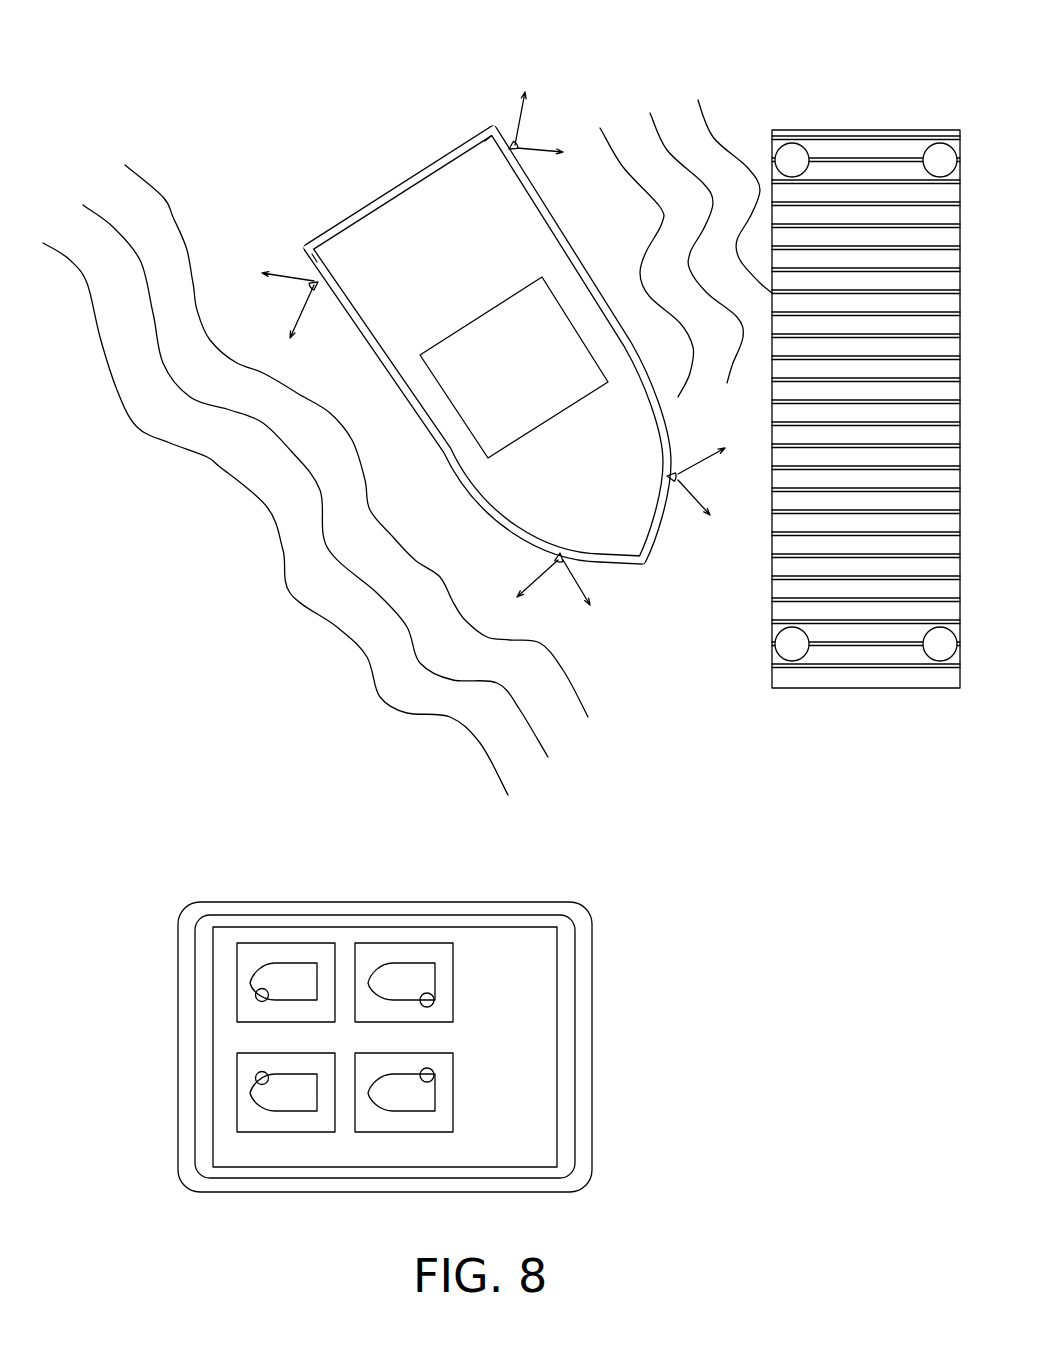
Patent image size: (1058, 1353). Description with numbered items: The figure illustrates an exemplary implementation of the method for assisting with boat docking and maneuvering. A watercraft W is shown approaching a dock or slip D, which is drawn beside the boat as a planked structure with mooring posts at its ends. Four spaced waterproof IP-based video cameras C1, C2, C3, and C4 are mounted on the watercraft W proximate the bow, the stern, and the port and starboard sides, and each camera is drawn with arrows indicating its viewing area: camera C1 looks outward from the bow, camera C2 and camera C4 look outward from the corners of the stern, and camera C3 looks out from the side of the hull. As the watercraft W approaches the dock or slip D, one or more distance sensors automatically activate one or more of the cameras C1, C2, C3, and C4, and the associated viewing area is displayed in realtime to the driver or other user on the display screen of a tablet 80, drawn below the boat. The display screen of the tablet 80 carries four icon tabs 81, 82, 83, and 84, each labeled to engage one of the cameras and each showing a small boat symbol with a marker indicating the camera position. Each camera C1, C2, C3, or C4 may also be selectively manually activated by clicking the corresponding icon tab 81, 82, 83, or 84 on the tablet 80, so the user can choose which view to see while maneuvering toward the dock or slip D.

The tablet 80 is at (178, 928).
The icon tab 81 is at (302, 942).
The icon tab 82 is at (430, 942).
The icon tab 83 is at (455, 1098).
The icon tab 84 is at (245, 1132).
The watercraft W is at (365, 200).
The dock or slip D is at (856, 131).
The video camera C1 is at (696, 481).
The video camera C2 is at (536, 134).
The video camera C3 is at (553, 578).
The video camera C4 is at (300, 305).